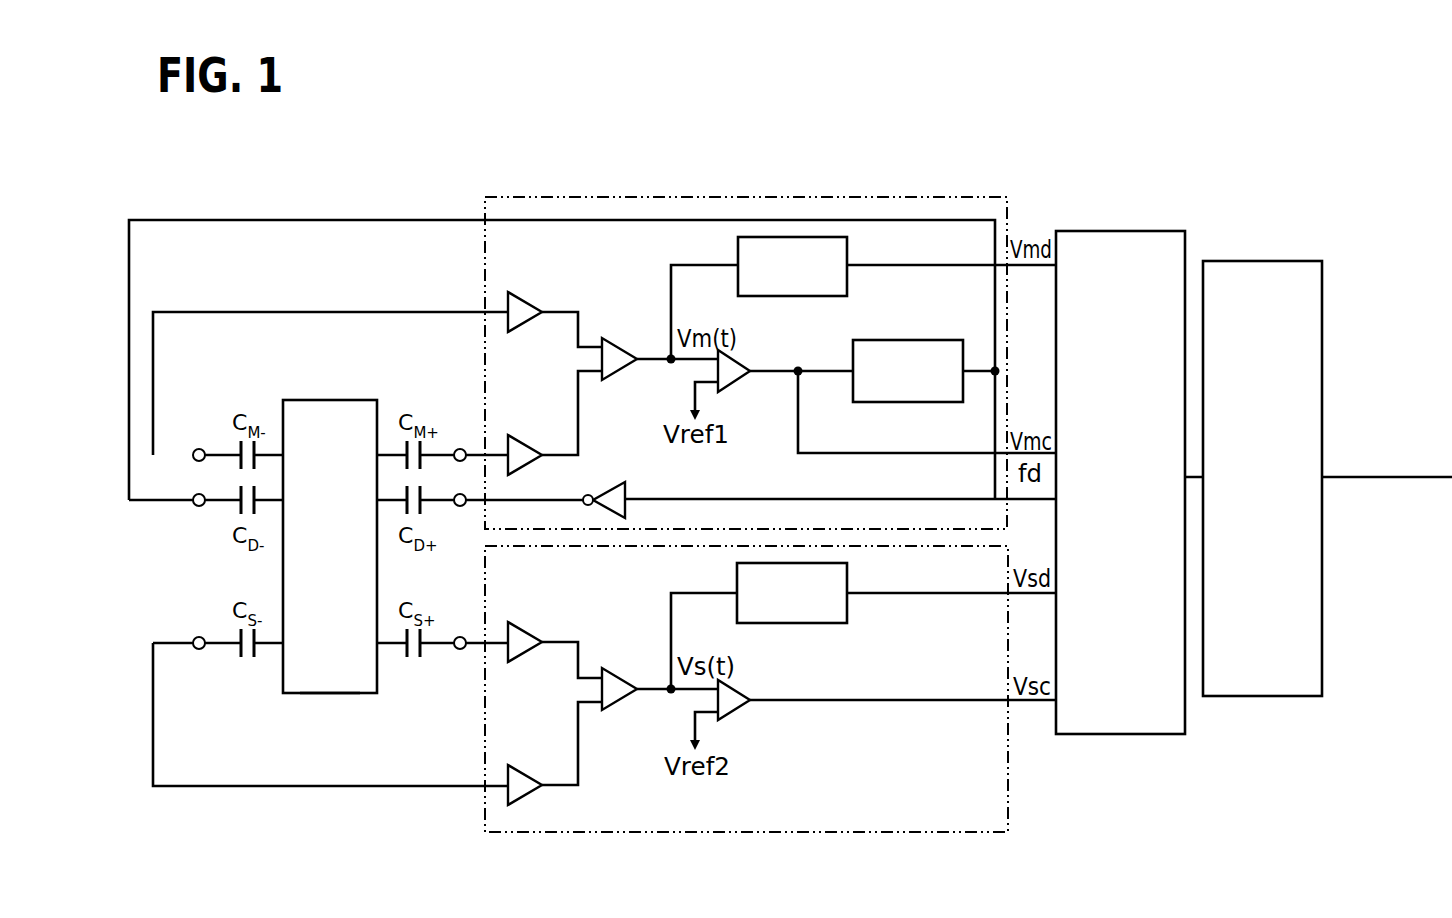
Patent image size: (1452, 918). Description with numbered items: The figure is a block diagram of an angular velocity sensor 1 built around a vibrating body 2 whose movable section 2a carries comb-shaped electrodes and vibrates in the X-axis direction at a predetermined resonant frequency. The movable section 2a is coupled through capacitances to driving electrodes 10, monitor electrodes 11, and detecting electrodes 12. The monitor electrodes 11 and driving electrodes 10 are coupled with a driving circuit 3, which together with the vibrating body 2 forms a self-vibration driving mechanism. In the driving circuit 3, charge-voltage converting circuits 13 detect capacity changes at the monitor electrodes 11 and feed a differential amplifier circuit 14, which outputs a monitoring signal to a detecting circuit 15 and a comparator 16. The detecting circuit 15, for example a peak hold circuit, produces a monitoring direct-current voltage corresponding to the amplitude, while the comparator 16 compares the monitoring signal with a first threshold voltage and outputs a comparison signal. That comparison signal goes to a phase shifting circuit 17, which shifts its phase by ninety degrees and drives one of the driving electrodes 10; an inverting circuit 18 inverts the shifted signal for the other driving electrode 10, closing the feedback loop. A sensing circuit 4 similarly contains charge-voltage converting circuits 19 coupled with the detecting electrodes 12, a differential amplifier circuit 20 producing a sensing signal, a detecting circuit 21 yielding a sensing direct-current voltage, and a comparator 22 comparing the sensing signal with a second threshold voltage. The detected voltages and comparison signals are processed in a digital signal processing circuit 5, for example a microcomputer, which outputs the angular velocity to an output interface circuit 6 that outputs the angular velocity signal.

The angular velocity sensor 1 is at (995, 165).
The vibrating body 2 is at (388, 688).
The movable section 2a is at (328, 694).
The driving circuit 3 is at (678, 193).
The sensing circuit 4 is at (757, 835).
The digital signal processing circuit 5 is at (1117, 230).
The output interface circuit 6 is at (1252, 260).
The driving electrodes 10 is at (199, 507).
The monitor electrodes 11 is at (199, 448).
The detecting electrodes 12 is at (199, 636).
The charge-voltage converting circuits 13 is at (524, 296).
The differential amplifier circuit 14 is at (620, 337).
The detecting circuit 15 is at (847, 286).
The comparator 16 is at (738, 352).
The phase shifting circuit 17 is at (940, 340).
The inverting circuit 18 is at (626, 487).
The charge-voltage converting circuits 19 is at (526, 628).
The differential amplifier circuit 20 is at (620, 671).
The detecting circuit 21 is at (795, 625).
The comparator 22 is at (740, 714).